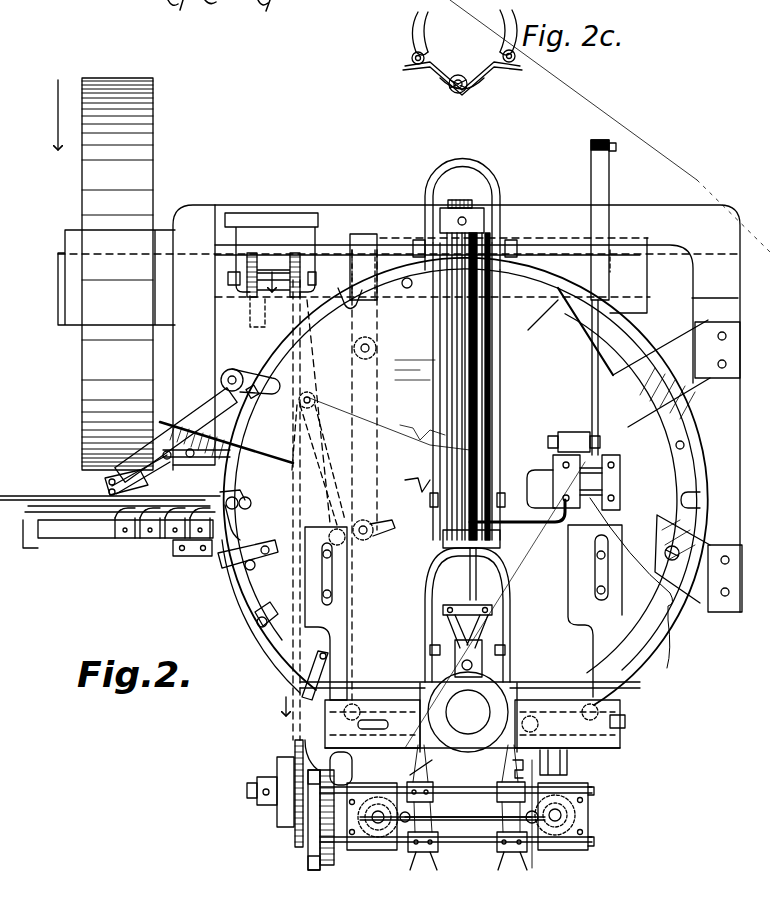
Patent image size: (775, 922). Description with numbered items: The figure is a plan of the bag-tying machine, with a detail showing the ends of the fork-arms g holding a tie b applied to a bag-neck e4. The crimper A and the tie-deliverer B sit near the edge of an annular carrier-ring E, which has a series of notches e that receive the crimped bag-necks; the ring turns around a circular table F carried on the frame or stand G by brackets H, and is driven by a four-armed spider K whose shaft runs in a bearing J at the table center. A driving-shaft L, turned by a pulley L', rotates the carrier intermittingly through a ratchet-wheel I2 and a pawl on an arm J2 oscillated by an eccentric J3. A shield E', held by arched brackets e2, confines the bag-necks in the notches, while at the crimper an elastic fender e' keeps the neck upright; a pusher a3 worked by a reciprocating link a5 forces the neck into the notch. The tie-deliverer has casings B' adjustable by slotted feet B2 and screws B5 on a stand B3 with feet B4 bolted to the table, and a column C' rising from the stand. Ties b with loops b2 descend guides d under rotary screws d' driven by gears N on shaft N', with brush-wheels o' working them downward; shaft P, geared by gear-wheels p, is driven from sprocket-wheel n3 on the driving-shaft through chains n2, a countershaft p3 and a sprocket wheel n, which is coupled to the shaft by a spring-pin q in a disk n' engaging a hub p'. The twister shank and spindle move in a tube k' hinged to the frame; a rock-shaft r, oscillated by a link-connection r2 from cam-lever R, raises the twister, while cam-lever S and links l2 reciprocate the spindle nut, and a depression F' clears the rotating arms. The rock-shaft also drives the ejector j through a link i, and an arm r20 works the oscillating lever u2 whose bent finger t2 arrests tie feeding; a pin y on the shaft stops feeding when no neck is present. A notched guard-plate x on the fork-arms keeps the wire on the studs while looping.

In FIG. 2, the pulley L' is at (105, 260).
In FIG. 2, the driving-shaft L is at (378, 248).
In FIG. 2, the frame or stand G is at (450, 408).
In FIG. 2, the sprocket wheel n is at (254, 549).
In FIG. 2, the countershaft p3 is at (228, 278).
In FIG. 2, the sprocket-wheel n3 is at (265, 312).
In FIG. 2, the eccentric J3 is at (363, 234).
In FIG. 2, the circular table F is at (466, 481).
In FIG. 2, the casing or tube k' is at (557, 331).
In FIG. 2, the chains n2 is at (318, 405).
In FIG. 2, the notches e is at (472, 456).
In FIG. 2, the cam-lever S is at (470, 182).
In FIG. 2, the cam-lever R is at (609, 188).
In FIG. 2, the link-connection r2 is at (590, 182).
In FIG. 2, the arm r20 is at (578, 440).
In FIG. 2, the link i is at (652, 478).
In FIG. 2, the annular carrier-ring E is at (474, 497).
In FIG. 2, the brackets H is at (645, 380).
In FIG. 2, the ejector j is at (539, 605).
In FIG. 2, the links l2 is at (415, 375).
In FIG. 2, the ratchet-wheel I2 is at (416, 421).
In FIG. 2, the arm J2 is at (413, 474).
In FIG. 2, the crimper A is at (110, 532).
In FIG. 2, the pusher a3 is at (110, 480).
In FIG. 2, the reciprocating link a5 is at (140, 470).
In FIG. 2, the elastic fender e' is at (263, 494).
In FIG. 2, the four-armed spider K is at (230, 580).
In FIG. 2, the arched brackets e2 is at (258, 558).
In FIG. 2C, the bag-neck e4 is at (458, 74).
In FIG. 2, the bag-neck e4 is at (262, 622).
In FIG. 2, the shield E' is at (300, 693).
In FIG. 2, the feet B4 is at (347, 588).
In FIG. 2, the bearing J is at (370, 552).
In FIG. 2, the column C' is at (454, 619).
In FIG. 2, the stand B3 is at (510, 675).
In FIG. 2, the rock-shaft r is at (522, 548).
In FIG. 2, the depression F' is at (519, 592).
In FIG. 2, the slotted feet B2 is at (362, 700).
In FIG. 2, the screws B5 is at (625, 722).
In FIG. 2, the oscillating lever u2 is at (575, 765).
In FIG. 2, the bent finger t2 is at (520, 764).
In FIG. 2, the tie-deliverer B is at (456, 817).
In FIG. 2, the casings B' is at (503, 836).
In FIG. 2, the shaft N' is at (618, 838).
In FIG. 2, the shaft P is at (247, 793).
In FIG. 2, the spring-pin q is at (246, 762).
In FIG. 2, the spring arm q' is at (232, 824).
In FIG. 2, the hub p' is at (253, 840).
In FIG. 2, the disk n' is at (245, 860).
In FIG. 2, the gears N is at (324, 816).
In FIG. 2, the pin y is at (314, 866).
In FIG. 2, the gear-wheels p is at (322, 895).
In FIG. 2, the rotary screws d' is at (348, 864).
In FIG. 2C, the fork-arms g is at (434, 20).
In FIG. 2, the fork-arms g is at (424, 761).
In FIG. 2C, the ties b is at (478, 84).
In FIG. 2, the ties b is at (480, 820).
In FIG. 2, the brush-wheels o' is at (471, 852).
In FIG. 2, the guides d is at (537, 870).
In FIG. 2C, the loops b2 is at (410, 60).
In FIG. 2C, the notched guard-plate x is at (518, 70).